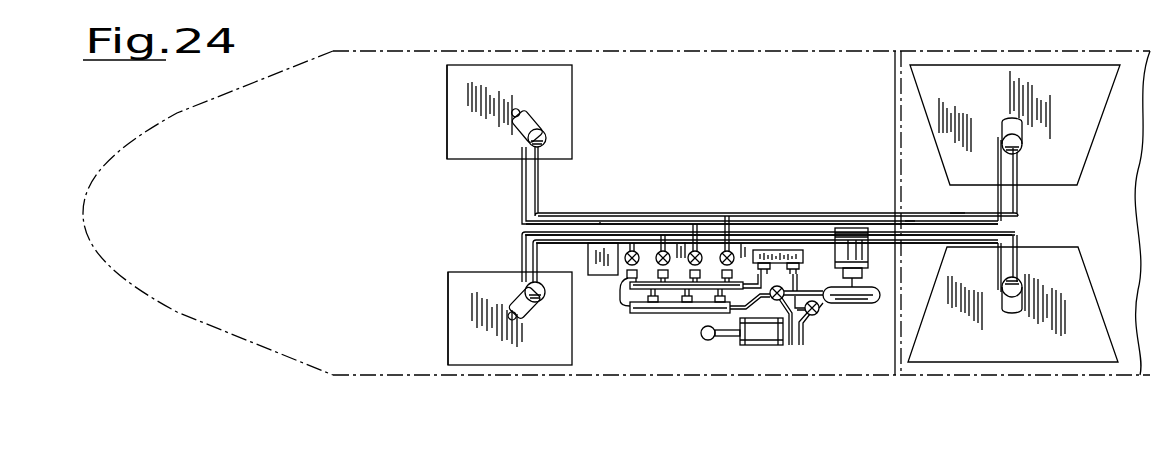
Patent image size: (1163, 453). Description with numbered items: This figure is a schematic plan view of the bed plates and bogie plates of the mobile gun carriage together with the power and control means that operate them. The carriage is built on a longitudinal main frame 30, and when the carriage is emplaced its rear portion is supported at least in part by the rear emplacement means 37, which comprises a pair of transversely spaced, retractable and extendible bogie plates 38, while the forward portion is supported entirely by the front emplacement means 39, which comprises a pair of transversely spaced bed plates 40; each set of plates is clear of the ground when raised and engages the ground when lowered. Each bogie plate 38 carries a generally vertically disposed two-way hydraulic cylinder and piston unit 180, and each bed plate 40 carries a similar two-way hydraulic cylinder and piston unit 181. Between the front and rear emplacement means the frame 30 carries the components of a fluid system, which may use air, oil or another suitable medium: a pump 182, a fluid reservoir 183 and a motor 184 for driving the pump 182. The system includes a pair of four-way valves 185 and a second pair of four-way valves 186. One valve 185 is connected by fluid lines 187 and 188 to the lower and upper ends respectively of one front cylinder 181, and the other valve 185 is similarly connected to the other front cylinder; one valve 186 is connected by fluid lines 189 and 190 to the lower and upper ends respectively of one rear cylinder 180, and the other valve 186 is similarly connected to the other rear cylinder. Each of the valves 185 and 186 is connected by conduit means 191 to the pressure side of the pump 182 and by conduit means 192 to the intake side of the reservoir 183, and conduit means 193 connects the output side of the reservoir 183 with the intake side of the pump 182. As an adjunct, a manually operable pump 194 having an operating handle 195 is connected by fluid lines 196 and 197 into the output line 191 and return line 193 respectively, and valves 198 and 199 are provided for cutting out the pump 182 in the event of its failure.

The longitudinal main frame 30 is at (377, 386).
The rear emplacement means 37 is at (1044, 373).
The bogie plates 38 is at (1066, 186).
The front emplacement means 39 is at (432, 289).
The bed plates 40 is at (446, 131).
The two-way hydraulic cylinder and piston unit 180 is at (1022, 144).
The two-way hydraulic cylinder and piston unit 181 is at (536, 129).
The pump 182 is at (878, 301).
The fluid reservoir 183 is at (690, 229).
The motor 184 is at (868, 249).
The four-way valves 185 is at (633, 238).
The four-way valves 186 is at (718, 246).
The fluid line 187 is at (603, 232).
The fluid line 188 is at (556, 223).
The fluid line 189 is at (957, 230).
The fluid line 190 is at (912, 221).
The conduit means 191 is at (650, 306).
The conduit means 192 is at (641, 283).
The conduit means 193 is at (798, 287).
The manually operable pump 194 is at (745, 341).
The operating handle 195 is at (704, 339).
The fluid line 196 is at (793, 343).
The fluid line 197 is at (801, 329).
The valve 198 is at (773, 299).
The valve 199 is at (818, 313).